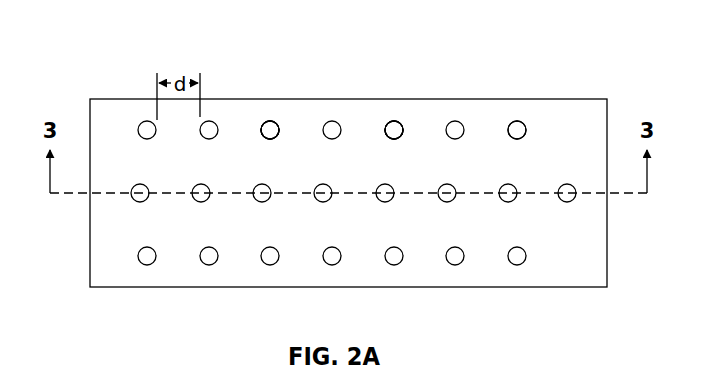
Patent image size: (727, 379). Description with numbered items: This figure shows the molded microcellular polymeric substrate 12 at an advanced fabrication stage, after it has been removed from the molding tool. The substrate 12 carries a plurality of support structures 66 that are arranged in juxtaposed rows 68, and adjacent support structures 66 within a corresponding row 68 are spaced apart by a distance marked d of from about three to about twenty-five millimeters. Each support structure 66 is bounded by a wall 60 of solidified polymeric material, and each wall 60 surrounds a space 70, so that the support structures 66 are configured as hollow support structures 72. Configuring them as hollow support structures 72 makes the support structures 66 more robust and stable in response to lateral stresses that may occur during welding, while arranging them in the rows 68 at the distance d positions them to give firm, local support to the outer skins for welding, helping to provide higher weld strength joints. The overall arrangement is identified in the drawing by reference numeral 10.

The perforated panel assembly 10 is at (96, 37).
The molded microcellular polymeric substrate 12 is at (598, 255).
The walls 60 is at (277, 122).
The support structures 66 is at (141, 121).
The juxtaposed rows 68 is at (548, 124).
The space 70 is at (270, 130).
The hollow support structures 72 is at (270, 132).